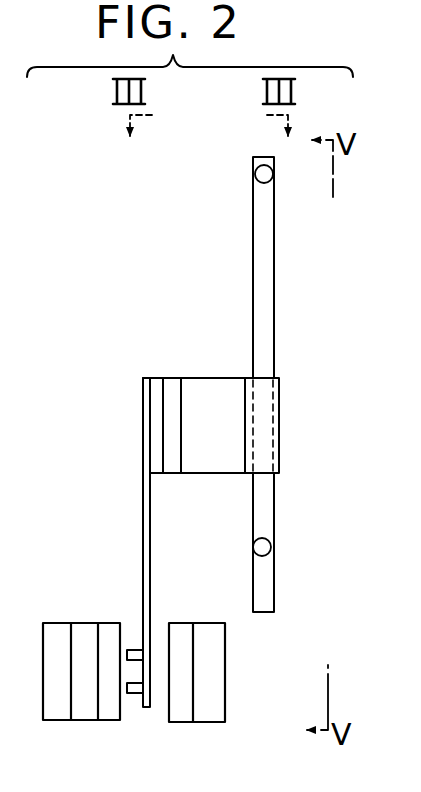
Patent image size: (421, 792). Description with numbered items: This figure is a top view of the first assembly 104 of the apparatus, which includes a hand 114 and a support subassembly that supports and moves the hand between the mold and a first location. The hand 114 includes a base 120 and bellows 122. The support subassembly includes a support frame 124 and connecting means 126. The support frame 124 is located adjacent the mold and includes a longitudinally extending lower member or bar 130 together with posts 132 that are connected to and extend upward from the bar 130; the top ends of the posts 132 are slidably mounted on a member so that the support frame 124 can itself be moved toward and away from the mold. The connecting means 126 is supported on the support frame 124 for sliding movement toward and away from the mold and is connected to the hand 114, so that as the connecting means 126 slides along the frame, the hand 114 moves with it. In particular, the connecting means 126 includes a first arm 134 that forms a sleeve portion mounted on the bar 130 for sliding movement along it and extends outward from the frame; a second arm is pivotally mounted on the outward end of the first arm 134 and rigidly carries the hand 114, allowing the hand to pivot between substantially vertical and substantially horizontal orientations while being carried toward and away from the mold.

The first assembly 104 is at (141, 221).
The hand 114 is at (106, 542).
The base 120 is at (141, 570).
The bellows 122 is at (130, 650).
The support frame 124 is at (264, 384).
The connecting means 126 is at (193, 416).
The lower member 130 is at (258, 288).
The posts 132 is at (263, 174).
The first arm 134 is at (197, 463).